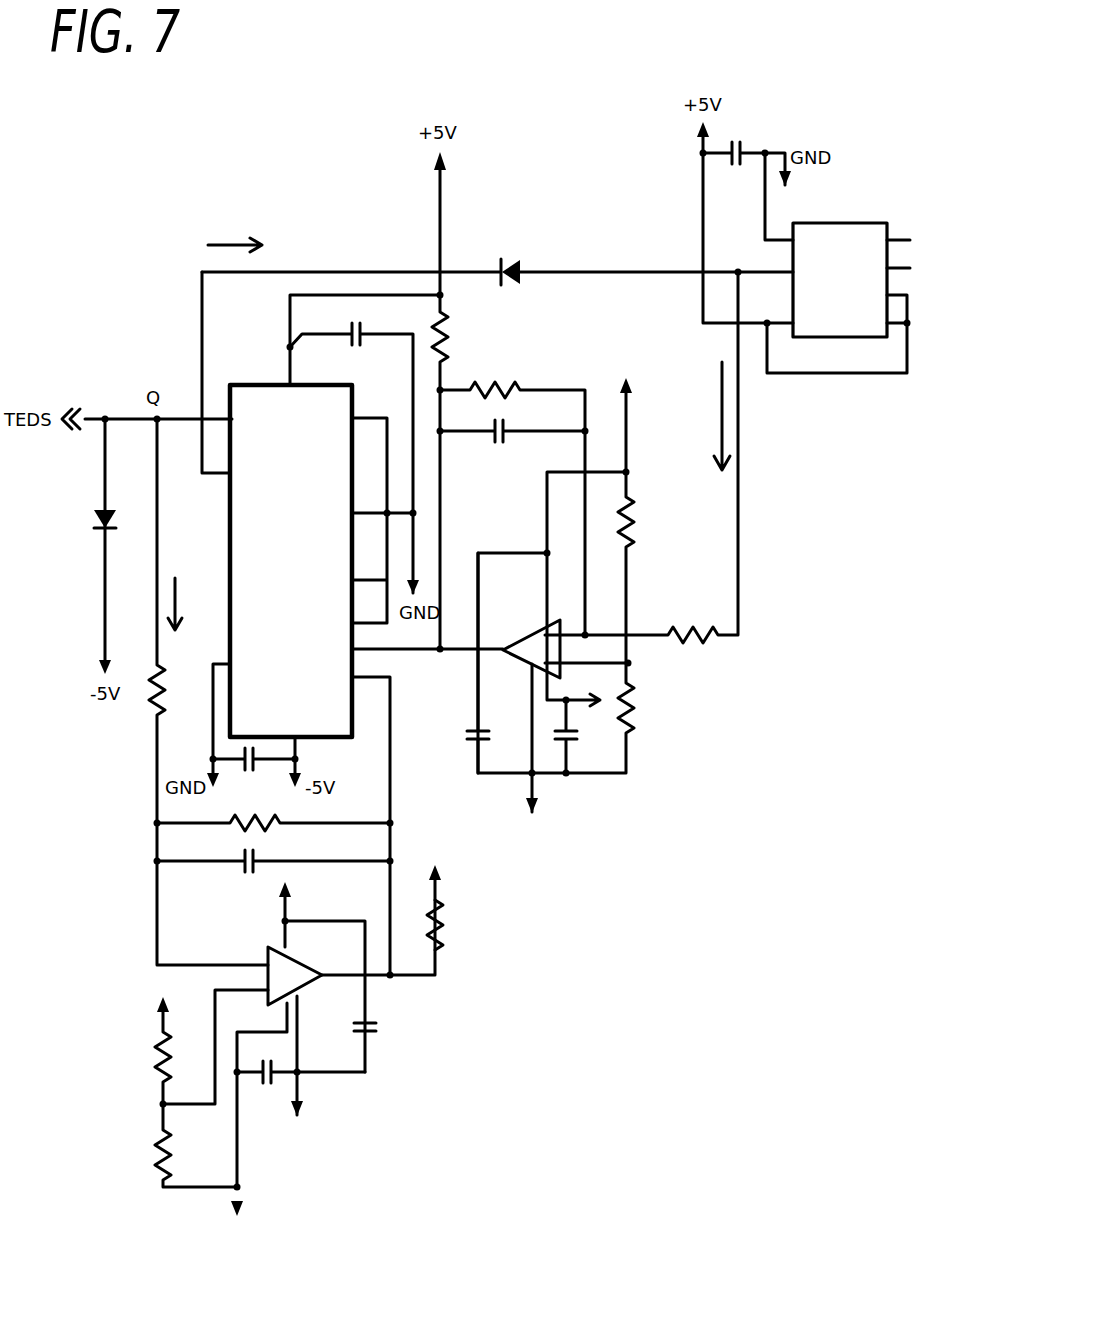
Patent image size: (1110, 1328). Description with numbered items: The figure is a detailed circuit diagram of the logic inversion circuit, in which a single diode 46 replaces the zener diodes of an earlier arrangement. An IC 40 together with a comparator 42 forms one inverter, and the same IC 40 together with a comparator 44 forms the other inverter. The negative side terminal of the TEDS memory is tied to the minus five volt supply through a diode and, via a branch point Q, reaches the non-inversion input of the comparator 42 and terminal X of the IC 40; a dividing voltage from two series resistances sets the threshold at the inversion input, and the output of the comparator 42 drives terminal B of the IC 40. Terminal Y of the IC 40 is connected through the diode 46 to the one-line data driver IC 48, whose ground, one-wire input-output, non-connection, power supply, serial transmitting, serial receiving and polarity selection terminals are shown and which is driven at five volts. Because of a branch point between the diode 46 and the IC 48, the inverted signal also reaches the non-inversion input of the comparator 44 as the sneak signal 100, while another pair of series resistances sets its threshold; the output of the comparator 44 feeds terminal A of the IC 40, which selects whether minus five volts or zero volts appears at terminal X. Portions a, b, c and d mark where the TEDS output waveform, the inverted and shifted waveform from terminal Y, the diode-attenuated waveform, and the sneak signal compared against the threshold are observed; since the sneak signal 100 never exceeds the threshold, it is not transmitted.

The IC 40 is at (265, 353).
The comparator 42 is at (357, 1088).
The comparator 44 is at (642, 784).
The diode 46 is at (513, 258).
The one-line data driver IC 48 is at (855, 221).
The sneak signal 100 is at (718, 416).
The portion a is at (126, 416).
The portion b is at (339, 268).
The portion c is at (630, 268).
The portion d is at (728, 641).